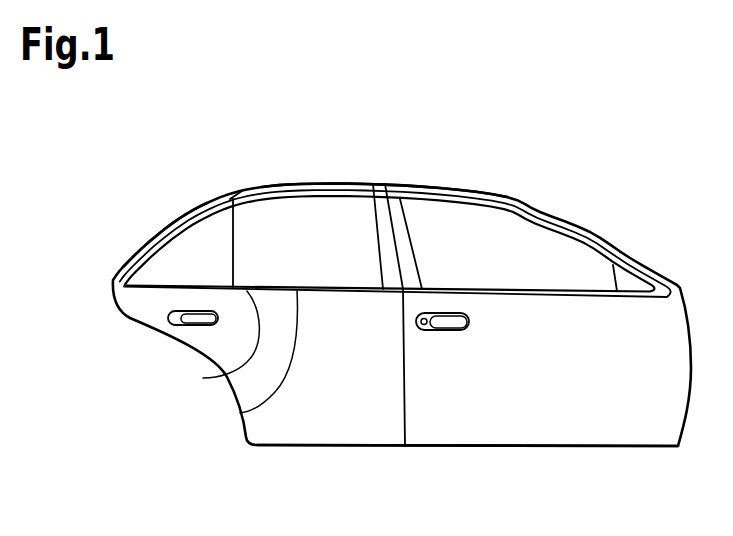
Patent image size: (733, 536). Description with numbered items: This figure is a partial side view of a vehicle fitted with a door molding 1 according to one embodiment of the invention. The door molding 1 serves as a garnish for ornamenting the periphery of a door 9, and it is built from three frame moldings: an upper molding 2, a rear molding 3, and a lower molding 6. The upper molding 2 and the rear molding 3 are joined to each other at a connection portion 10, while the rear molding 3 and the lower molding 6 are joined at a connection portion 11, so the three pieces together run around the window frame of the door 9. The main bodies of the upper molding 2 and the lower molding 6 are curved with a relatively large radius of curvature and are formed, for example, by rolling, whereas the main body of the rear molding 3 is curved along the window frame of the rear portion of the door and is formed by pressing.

The door molding 1 is at (402, 292).
The upper molding 2 is at (311, 186).
The rear molding 3 is at (164, 232).
The lower molding 6 is at (240, 413).
The door 9 is at (333, 412).
The connection portion 10 is at (246, 193).
The connection portion 11 is at (203, 378).